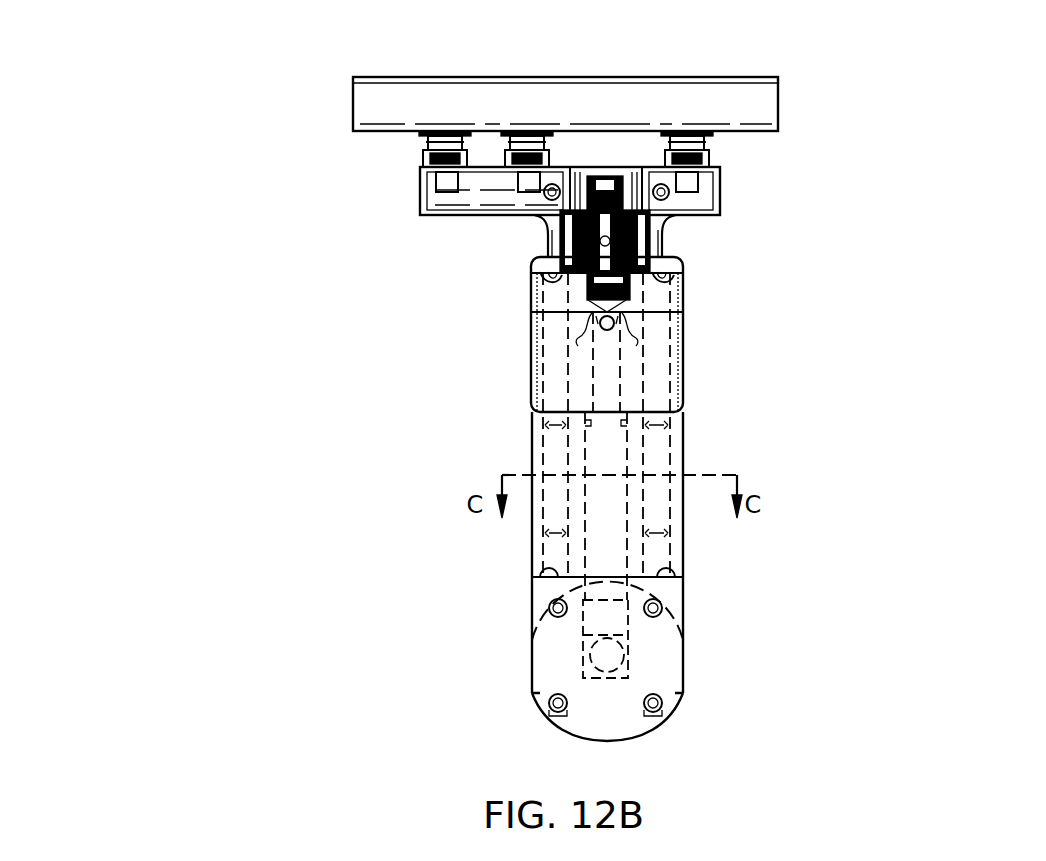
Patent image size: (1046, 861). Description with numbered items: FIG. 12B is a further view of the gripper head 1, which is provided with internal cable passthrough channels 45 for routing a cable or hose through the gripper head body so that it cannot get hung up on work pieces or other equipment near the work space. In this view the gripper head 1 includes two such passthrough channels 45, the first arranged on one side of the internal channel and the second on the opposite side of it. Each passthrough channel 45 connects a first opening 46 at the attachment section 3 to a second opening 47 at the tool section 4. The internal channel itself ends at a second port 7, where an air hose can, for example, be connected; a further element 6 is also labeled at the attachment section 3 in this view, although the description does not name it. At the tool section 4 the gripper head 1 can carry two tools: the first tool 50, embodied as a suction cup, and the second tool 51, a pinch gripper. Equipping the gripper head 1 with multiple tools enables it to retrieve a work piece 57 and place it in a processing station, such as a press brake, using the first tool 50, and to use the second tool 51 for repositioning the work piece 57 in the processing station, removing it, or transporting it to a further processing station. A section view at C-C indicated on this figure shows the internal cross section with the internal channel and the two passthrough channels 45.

The gripper head 1 is at (328, 417).
The attachment section 3 is at (550, 665).
The tool section 4 is at (537, 300).
The opening 6 is at (617, 660).
The second port 7 is at (660, 353).
The passthrough channel 45 is at (553, 368).
The first opening 46 is at (560, 577).
The second opening 47 is at (560, 287).
The first tool 50 is at (710, 147).
The second tool 51 is at (575, 242).
The work piece 57 is at (780, 97).